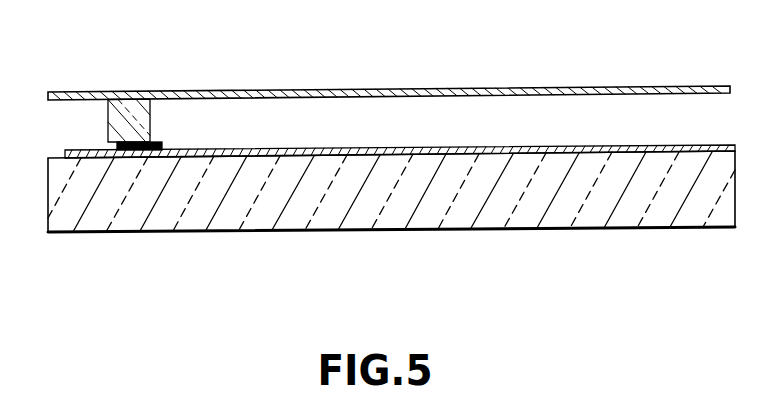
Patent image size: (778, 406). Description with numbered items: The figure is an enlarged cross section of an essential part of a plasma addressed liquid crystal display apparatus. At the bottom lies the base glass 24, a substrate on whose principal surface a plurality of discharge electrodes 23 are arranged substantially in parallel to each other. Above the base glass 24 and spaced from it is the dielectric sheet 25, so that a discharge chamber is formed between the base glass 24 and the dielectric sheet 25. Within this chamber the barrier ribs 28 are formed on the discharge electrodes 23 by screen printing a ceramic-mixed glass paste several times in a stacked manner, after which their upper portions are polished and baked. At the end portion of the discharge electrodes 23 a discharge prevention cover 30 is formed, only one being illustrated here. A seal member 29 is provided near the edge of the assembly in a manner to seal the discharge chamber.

The discharge electrode 23 is at (375, 153).
The base glass 24 is at (197, 225).
The dielectric sheet 25 is at (555, 93).
The barrier rib 28 is at (455, 117).
The seal member 29 is at (123, 108).
The discharge prevention cover 30 is at (155, 140).